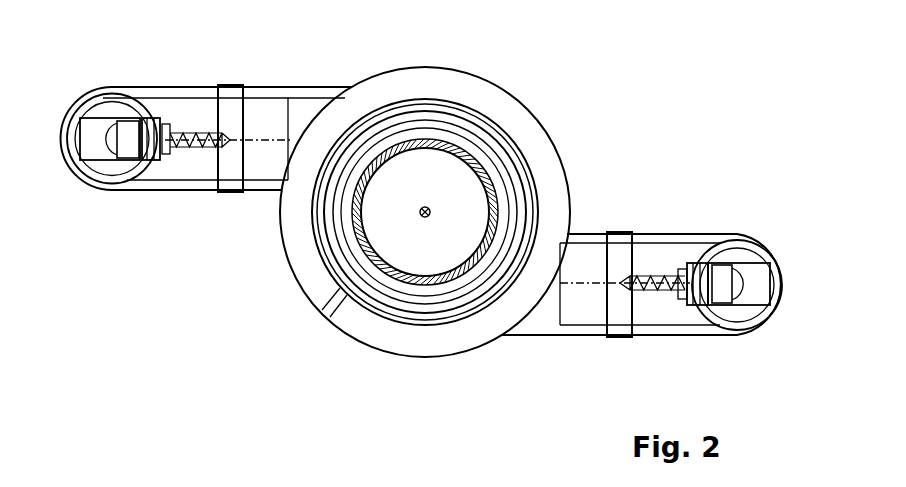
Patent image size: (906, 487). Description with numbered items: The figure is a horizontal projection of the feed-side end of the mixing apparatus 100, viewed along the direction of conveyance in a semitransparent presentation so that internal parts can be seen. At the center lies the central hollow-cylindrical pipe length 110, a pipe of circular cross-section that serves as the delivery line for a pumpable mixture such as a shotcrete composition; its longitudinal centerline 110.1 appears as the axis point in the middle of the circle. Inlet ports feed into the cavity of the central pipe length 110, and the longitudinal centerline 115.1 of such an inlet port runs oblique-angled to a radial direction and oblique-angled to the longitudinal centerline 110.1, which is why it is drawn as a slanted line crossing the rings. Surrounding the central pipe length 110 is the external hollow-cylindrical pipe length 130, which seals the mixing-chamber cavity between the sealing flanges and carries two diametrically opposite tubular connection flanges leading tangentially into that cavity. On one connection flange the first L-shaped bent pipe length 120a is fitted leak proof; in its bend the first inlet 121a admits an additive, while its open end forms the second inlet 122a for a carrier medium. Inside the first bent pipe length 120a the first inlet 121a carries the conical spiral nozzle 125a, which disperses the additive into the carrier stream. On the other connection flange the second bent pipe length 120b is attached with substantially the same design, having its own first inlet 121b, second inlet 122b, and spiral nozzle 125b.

The mixing apparatus 100 is at (645, 108).
The central hollow-cylindrical pipe length 110 is at (383, 232).
The longitudinal centerline 110.1 is at (423, 206).
The longitudinal centerline of the inlet ports 115.1 is at (433, 360).
The first bent pipe length 120a is at (658, 222).
The second bent pipe length 120b is at (192, 76).
The first inlet 121a is at (772, 242).
The first inlet 121b is at (74, 94).
The second inlet 122a is at (776, 325).
The second inlet 122b is at (80, 172).
The spiral nozzle 125a is at (696, 263).
The spiral nozzle 125b is at (154, 118).
The external hollow-cylindrical pipe length 130 is at (466, 92).